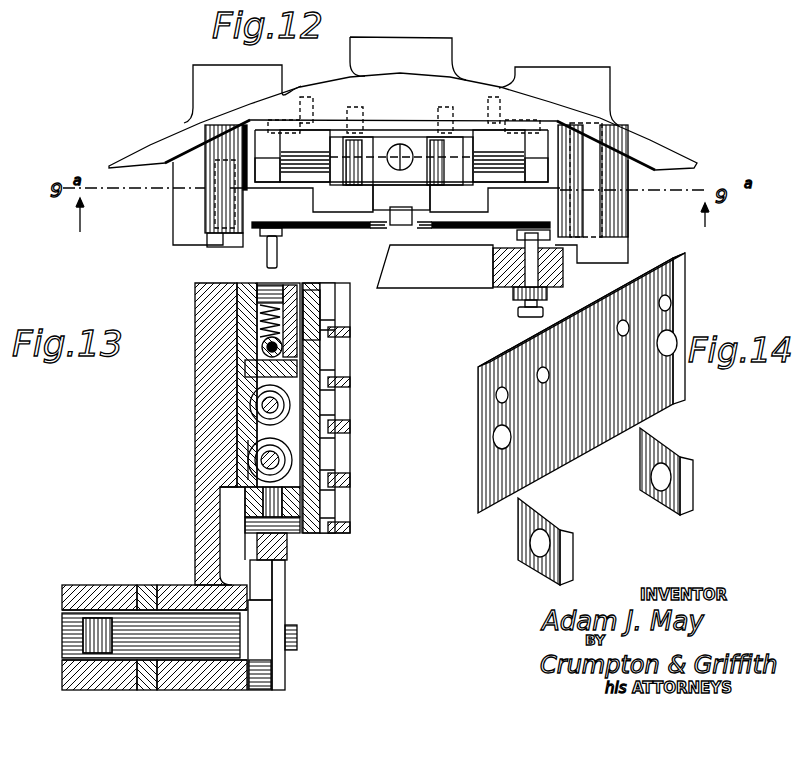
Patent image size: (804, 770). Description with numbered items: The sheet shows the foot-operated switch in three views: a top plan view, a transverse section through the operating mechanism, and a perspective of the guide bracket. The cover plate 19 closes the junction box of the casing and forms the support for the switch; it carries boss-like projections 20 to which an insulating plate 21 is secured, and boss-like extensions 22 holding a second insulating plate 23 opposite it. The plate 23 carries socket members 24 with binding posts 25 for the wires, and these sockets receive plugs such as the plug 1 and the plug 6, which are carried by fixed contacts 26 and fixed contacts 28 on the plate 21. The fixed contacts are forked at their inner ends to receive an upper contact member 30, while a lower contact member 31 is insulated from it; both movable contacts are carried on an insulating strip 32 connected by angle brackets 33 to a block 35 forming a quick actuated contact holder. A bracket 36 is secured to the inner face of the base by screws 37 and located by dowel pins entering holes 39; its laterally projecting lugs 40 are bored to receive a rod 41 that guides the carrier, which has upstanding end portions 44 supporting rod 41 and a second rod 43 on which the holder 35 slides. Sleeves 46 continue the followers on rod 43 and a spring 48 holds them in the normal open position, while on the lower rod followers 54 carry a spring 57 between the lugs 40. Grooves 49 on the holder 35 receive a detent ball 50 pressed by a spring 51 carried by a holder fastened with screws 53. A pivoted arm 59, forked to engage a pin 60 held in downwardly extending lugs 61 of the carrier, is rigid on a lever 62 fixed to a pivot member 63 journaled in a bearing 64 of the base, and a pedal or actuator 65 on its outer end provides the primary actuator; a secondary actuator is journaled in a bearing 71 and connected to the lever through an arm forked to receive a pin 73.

In FIG. 12, the plug 1 is at (558, 226).
In FIG. 12, the plug 6 is at (278, 257).
In FIG. 12, the cover plate 19 is at (648, 157).
In FIG. 13, the cover plate 19 is at (180, 293).
In FIG. 12, the boss-like projections 20 is at (222, 152).
In FIG. 12, the plate of insulating material 21 is at (243, 232).
In FIG. 13, the plate of insulating material 21 is at (348, 330).
In FIG. 12, the boss-like extensions 22 is at (185, 207).
In FIG. 12, the second plate of insulating material 23 is at (442, 277).
In FIG. 12, the socket members 24 is at (517, 292).
In FIG. 12, the binding posts 25 is at (519, 312).
In FIG. 12, the fixed contacts 26 is at (457, 222).
In FIG. 12, the fixed contacts 28 is at (340, 223).
In FIG. 12, the upper contact member 30 is at (400, 228).
In FIG. 13, the upper contact member 30 is at (333, 355).
In FIG. 13, the lower contact member 31 is at (338, 455).
In FIG. 12, the strip of insulating material 32 is at (401, 197).
In FIG. 13, the strip of insulating material 32 is at (312, 292).
In FIG. 12, the angle brackets 33 is at (313, 196).
In FIG. 12, the block 35 is at (333, 167).
In FIG. 12, the bracket 36 is at (400, 123).
In FIG. 13, the bracket 36 is at (245, 350).
In FIG. 14, the bracket 36 is at (672, 387).
In FIG. 12, the screws 37 is at (300, 100).
In FIG. 14, the holes 39 is at (672, 297).
In FIG. 13, the lugs 40 is at (222, 490).
In FIG. 14, the lugs 40 is at (690, 477).
In FIG. 13, the rod 41 is at (250, 482).
In FIG. 12, the second rod 43 is at (253, 132).
In FIG. 13, the second rod 43 is at (252, 452).
In FIG. 12, the upstanding end portions 44 is at (401, 170).
In FIG. 12, the sleeves 46 is at (402, 156).
In FIG. 13, the spring 48 is at (250, 406).
In FIG. 12, the notches or grooves 49 is at (368, 150).
In FIG. 13, the notches or grooves 49 is at (195, 378).
In FIG. 13, the ball 50 is at (262, 346).
In FIG. 13, the spring 51 is at (245, 318).
In FIG. 12, the screws 53 is at (452, 115).
In FIG. 14, the followers 54 is at (630, 322).
In FIG. 13, the spring 57 is at (262, 458).
In FIG. 13, the pivoted arm 59 is at (282, 593).
In FIG. 13, the pin 60 is at (300, 533).
In FIG. 13, the lugs 61 is at (248, 543).
In FIG. 13, the lever 62 is at (262, 668).
In FIG. 13, the pivot member 63 is at (123, 627).
In FIG. 12, the bearing 64 is at (435, 48).
In FIG. 13, the bearing 64 is at (173, 585).
In FIG. 13, the pedal or actuator 65 is at (90, 585).
In FIG. 12, the bearing 71 is at (195, 72).
In FIG. 13, the pin 73 is at (298, 635).